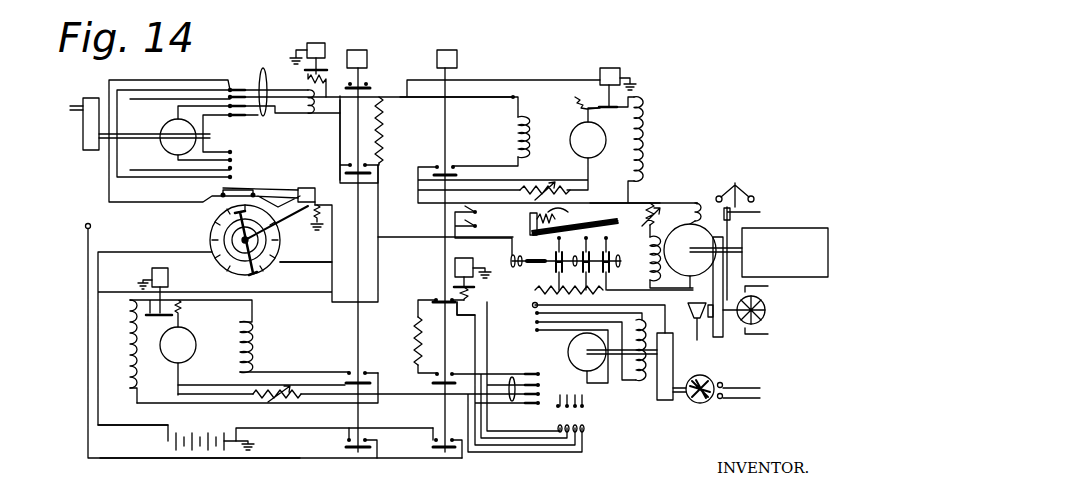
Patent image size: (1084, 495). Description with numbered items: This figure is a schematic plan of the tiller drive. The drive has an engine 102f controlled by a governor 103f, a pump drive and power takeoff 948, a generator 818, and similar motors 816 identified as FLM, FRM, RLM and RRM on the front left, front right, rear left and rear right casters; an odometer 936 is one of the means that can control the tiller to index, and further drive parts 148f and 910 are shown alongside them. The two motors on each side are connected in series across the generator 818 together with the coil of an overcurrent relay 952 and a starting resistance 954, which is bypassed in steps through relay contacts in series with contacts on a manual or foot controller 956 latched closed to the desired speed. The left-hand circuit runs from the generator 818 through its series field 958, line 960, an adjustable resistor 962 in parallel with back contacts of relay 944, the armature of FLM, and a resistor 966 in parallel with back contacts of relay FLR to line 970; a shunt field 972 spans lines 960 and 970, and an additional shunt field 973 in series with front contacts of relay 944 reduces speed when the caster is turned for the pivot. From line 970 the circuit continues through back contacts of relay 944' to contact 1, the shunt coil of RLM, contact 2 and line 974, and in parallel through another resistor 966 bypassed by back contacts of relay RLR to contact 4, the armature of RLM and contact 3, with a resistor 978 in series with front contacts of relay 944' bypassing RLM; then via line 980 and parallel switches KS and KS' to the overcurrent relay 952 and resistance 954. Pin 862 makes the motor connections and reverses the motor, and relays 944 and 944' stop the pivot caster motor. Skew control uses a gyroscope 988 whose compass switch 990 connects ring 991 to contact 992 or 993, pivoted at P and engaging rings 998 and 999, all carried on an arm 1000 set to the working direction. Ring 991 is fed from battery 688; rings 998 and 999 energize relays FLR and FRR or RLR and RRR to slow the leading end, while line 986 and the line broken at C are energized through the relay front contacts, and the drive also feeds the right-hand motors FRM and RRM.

The odometer 936 is at (90, 150).
The rear left motor RLM is at (173, 137).
The contact 1 is at (232, 88).
The contact 2 is at (243, 95).
The contact 3 is at (247, 108).
The contact 4 is at (250, 118).
The pin 862 is at (262, 78).
The rear left relay RLR is at (306, 45).
The resistor 966 is at (587, 80).
The shunt field 972 is at (314, 104).
The relay 944' is at (381, 251).
The relay 944 is at (470, 251).
The line 970 is at (455, 97).
The additional shunt field 973 is at (515, 146).
The front left motor FLM is at (572, 130).
The motors 816 is at (583, 156).
The front left relay FLR is at (621, 72).
The adjustable resistor 962 is at (589, 186).
The line 960 is at (588, 203).
The series field 958 is at (700, 190).
The governor 103f is at (742, 192).
The engine 102f is at (781, 229).
The pump drive and power takeoff 948 is at (719, 334).
The contact wheel 148f is at (766, 311).
The line 974 is at (340, 150).
The resistor 978 is at (380, 146).
The contact 993 is at (275, 195).
The pivot P is at (221, 194).
The contact 992 is at (213, 218).
The ring 998 is at (213, 233).
The ring 999 is at (213, 246).
The arm 1000 is at (305, 220).
The ring 991 is at (284, 258).
The gyroscope 988 is at (240, 279).
The compass switch 990 is at (264, 276).
The line 980 is at (393, 237).
The switch KS' is at (483, 212).
The switch KS is at (482, 227).
The manual or foot controller 956 is at (566, 234).
The front right relay FRR is at (471, 271).
The overcurrent relay 952 is at (512, 265).
The starting resistance 954 is at (533, 306).
The rear right relay RRR is at (152, 268).
The rear right motor RRM is at (188, 332).
The break point C is at (80, 227).
The conductor 910 is at (106, 425).
The battery 688 is at (248, 441).
The line 986 is at (128, 458).
The front right motor FRM is at (600, 372).
The generator 818 is at (650, 290).